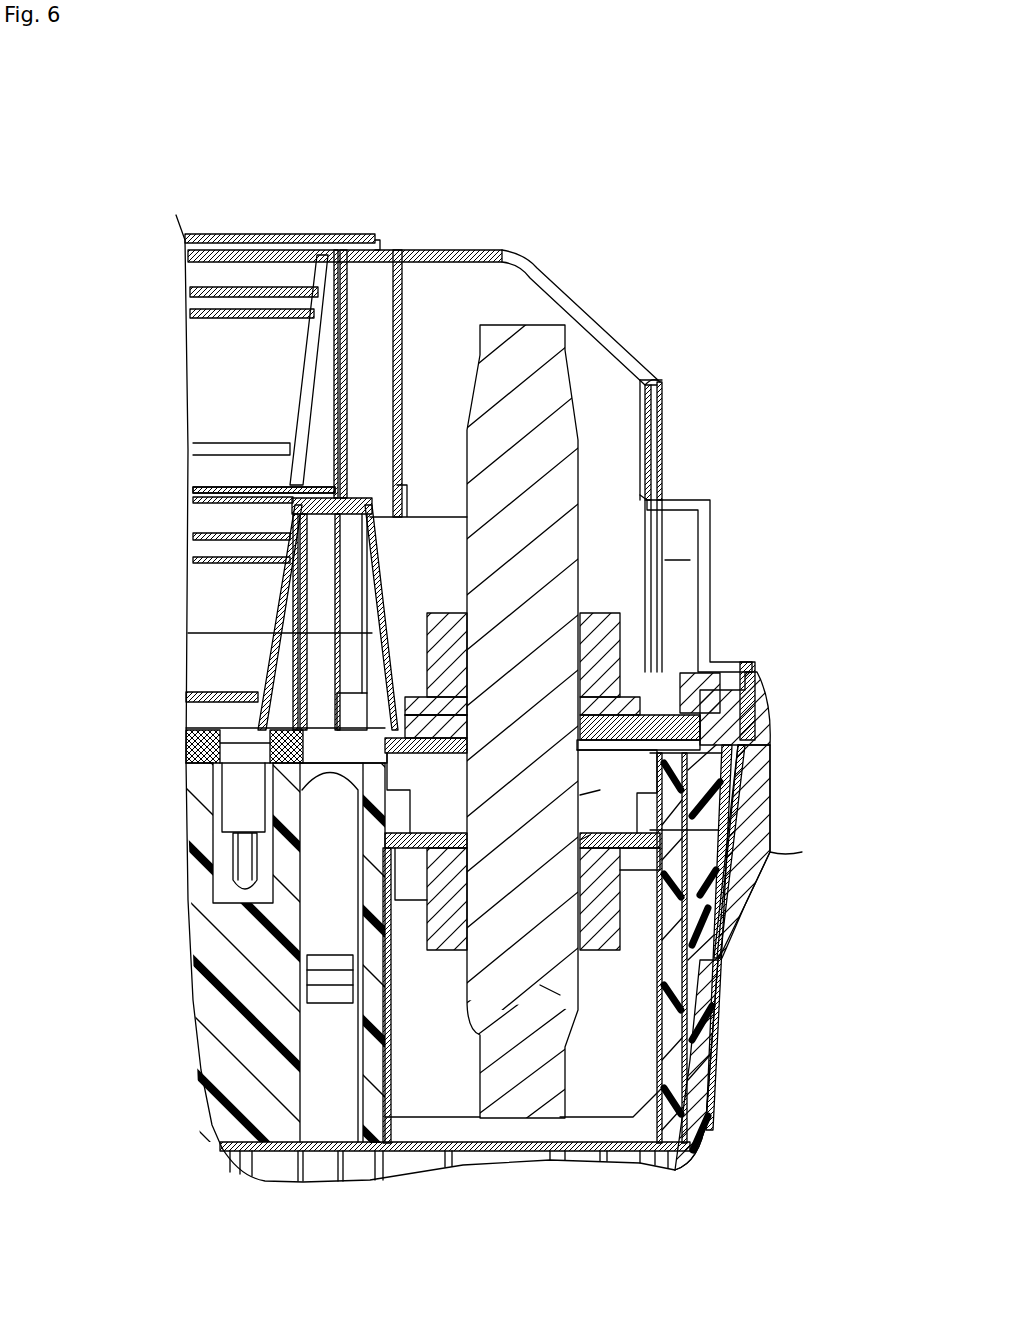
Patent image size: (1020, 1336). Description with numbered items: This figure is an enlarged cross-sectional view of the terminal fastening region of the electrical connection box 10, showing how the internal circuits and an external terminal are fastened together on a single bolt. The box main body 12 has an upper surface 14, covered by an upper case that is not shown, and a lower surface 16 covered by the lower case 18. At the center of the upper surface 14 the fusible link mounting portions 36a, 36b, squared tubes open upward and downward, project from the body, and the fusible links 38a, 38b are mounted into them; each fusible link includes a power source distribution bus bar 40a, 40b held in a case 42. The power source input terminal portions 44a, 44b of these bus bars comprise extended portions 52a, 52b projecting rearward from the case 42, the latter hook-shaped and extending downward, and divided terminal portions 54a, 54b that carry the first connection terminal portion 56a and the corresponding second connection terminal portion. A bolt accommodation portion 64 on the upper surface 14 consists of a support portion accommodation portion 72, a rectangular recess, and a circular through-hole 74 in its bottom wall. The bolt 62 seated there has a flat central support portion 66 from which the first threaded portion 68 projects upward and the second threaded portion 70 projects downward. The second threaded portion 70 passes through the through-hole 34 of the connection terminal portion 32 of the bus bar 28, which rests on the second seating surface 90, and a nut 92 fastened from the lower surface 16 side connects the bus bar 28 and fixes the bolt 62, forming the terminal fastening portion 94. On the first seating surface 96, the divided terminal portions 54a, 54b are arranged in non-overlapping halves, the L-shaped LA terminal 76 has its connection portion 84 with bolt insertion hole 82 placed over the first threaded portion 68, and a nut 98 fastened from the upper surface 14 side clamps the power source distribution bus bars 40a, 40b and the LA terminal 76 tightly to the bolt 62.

The electrical connection box 10 is at (448, 132).
The box main body 12 is at (646, 453).
The upper surface 14 is at (236, 620).
The lower surface 16 is at (417, 1205).
The lower case 18 is at (641, 800).
The bus bar 28 is at (385, 932).
The connection terminal portion 32 is at (440, 860).
The through-hole 34 is at (425, 835).
The fusible link mounting portion 36a is at (350, 605).
The fusible link mounting portion 36b is at (363, 327).
The fusible link 38a is at (222, 475).
The fusible link 38b is at (250, 222).
The power source distribution bus bar 40a is at (422, 514).
The power source distribution bus bar 40b is at (642, 446).
The case 42 is at (238, 352).
The power source input terminal portion 44a is at (227, 617).
The power source input terminal portion 44b is at (705, 506).
The extended portion 52a is at (407, 573).
The extended portion 52b is at (620, 415).
The divided terminal portion 54a is at (252, 730).
The divided terminal portion 54b is at (783, 717).
The first connection terminal portion 56a is at (423, 737).
The bolt 62 is at (530, 300).
The bolt accommodation portion 64 is at (610, 588).
The central support portion 66 is at (646, 760).
The first threaded portion 68 is at (517, 523).
The second threaded portion 70 is at (560, 1000).
The support portion accommodation portion 72 is at (425, 748).
The through-hole 74 is at (595, 837).
The LA terminal 76 is at (774, 735).
The bolt insertion hole 82 is at (588, 707).
The connection portion 84 is at (755, 680).
The second seating surface 90 is at (600, 800).
The nut 92 is at (540, 988).
The terminal fastening portion 94 is at (604, 565).
The first seating surface 96 is at (432, 705).
The nut 98 is at (600, 643).